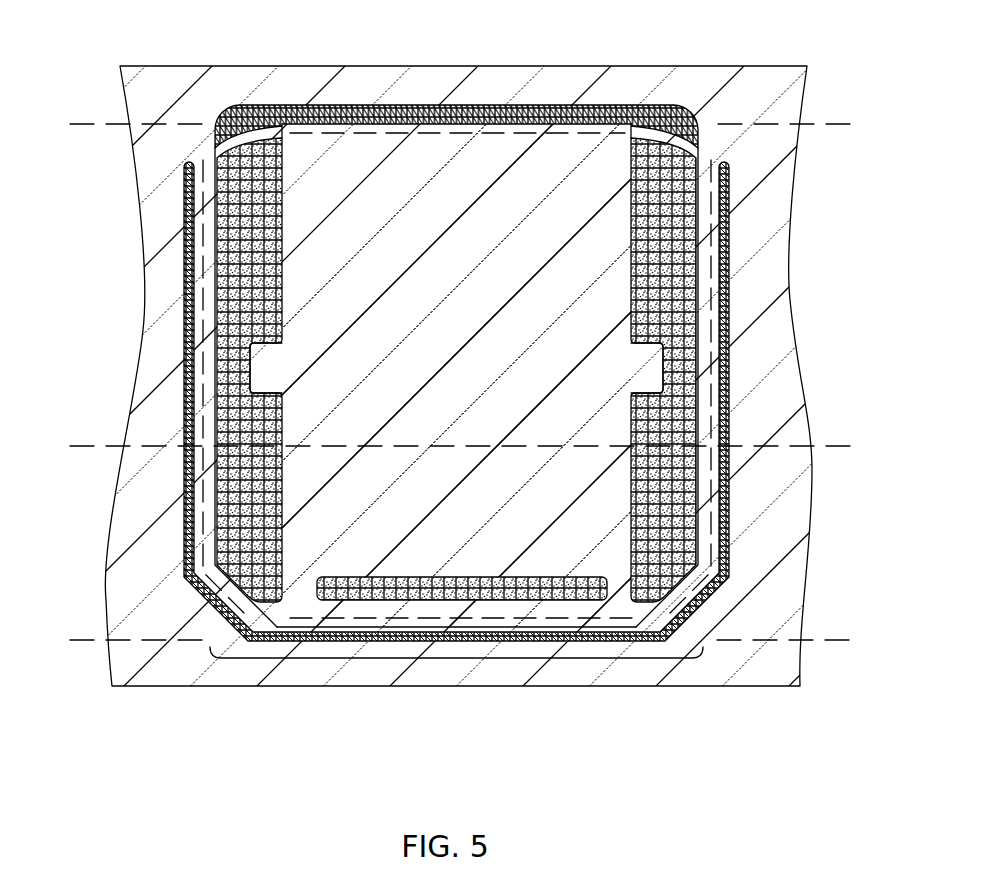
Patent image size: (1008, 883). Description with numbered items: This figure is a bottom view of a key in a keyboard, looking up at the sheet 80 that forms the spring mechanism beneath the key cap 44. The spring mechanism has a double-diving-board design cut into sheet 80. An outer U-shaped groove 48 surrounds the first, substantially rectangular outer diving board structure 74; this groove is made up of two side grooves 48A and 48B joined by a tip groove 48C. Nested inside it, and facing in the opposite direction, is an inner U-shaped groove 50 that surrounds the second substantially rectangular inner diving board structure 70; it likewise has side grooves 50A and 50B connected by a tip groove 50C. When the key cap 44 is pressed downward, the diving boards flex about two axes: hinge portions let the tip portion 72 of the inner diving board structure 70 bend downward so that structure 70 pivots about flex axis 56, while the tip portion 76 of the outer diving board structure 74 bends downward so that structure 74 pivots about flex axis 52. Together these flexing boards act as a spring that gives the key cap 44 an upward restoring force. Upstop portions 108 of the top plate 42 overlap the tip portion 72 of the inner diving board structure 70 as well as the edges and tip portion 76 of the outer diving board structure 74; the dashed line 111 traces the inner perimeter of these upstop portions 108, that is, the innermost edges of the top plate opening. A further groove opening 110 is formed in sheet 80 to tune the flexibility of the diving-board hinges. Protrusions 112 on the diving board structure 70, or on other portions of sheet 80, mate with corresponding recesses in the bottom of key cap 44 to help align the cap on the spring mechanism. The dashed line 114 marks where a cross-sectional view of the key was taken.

The top plate 42 is at (257, 120).
The key cap 44 is at (236, 244).
The outer U-shaped groove 48 is at (470, 449).
The side groove 48A is at (733, 330).
The side groove 48B is at (190, 353).
The tip groove 48C is at (508, 641).
The inner U-shaped groove 50 is at (456, 377).
The side groove 50A is at (683, 264).
The side groove 50B is at (237, 483).
The tip groove 50C is at (353, 117).
The flex axis 52 is at (96, 123).
The flex axis 56 is at (72, 638).
The inner diving board structure 70 is at (504, 359).
The tip portion 72 is at (433, 150).
The outer diving board structure 74 is at (273, 658).
The tip portion 76 is at (337, 627).
The sheet 80 is at (747, 80).
The upstop portions 108 is at (562, 133).
The groove opening 110 is at (353, 577).
The dashed line 111 is at (713, 207).
The protrusions 112 is at (258, 338).
The dashed line 114 is at (100, 444).